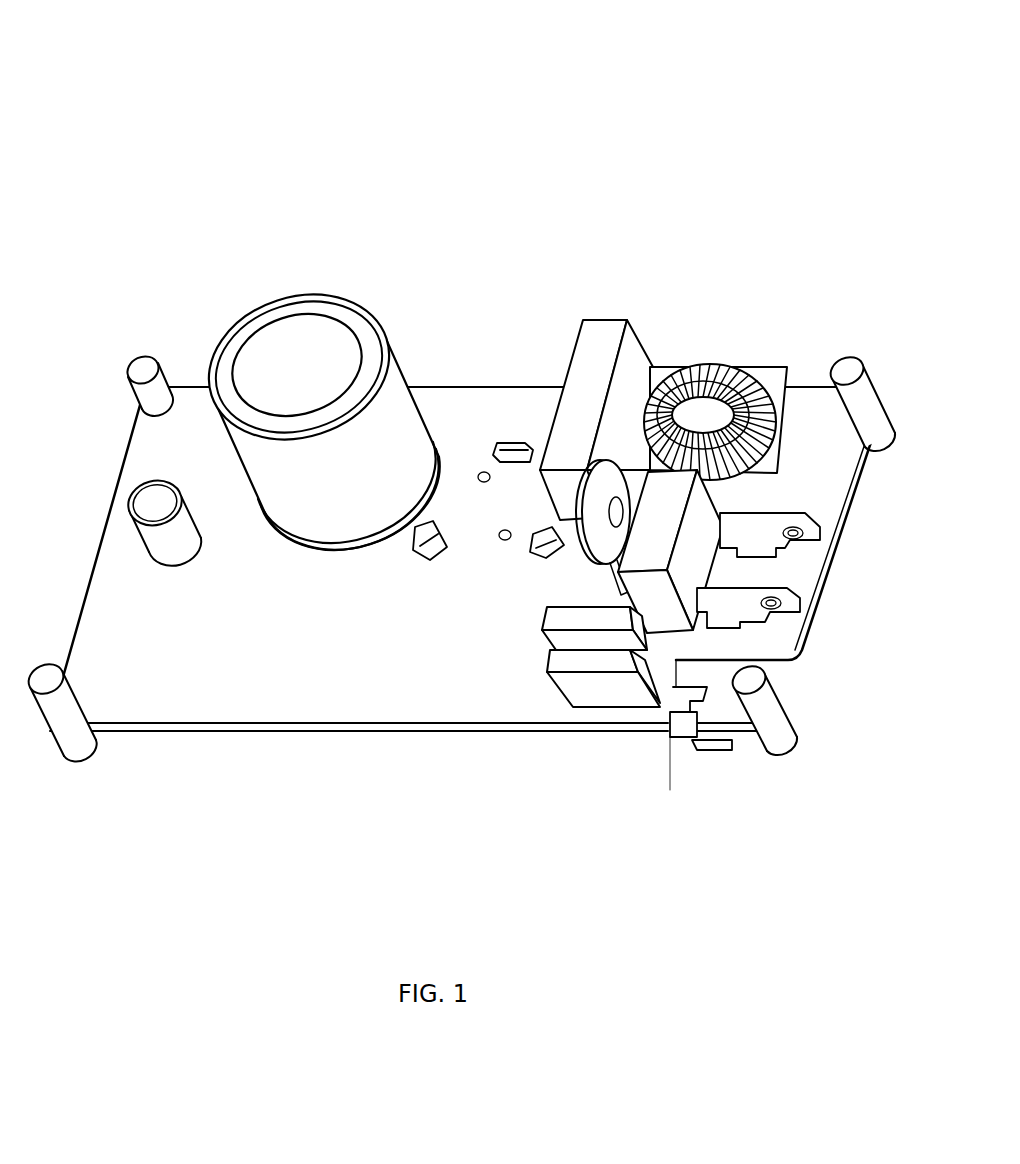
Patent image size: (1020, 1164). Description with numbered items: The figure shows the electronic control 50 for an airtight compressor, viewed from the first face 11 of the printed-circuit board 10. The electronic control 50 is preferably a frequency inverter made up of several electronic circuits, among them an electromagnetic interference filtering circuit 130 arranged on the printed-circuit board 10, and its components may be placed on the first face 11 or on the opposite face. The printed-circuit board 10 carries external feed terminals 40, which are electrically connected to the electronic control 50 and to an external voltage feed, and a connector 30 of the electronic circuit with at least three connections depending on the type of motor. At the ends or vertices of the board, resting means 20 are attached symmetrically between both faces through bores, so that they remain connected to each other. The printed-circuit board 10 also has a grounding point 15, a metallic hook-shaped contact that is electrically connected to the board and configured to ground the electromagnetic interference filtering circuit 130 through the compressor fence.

The printed-circuit board 10 is at (449, 648).
The first face 11 is at (281, 667).
The grounding point 15 is at (679, 723).
The resting means 20 is at (46, 680).
The connector 30 is at (550, 537).
The external feed terminals 40 is at (752, 613).
The electronic control 50 is at (459, 451).
The electromagnetic interference filtering circuit 130 is at (719, 335).